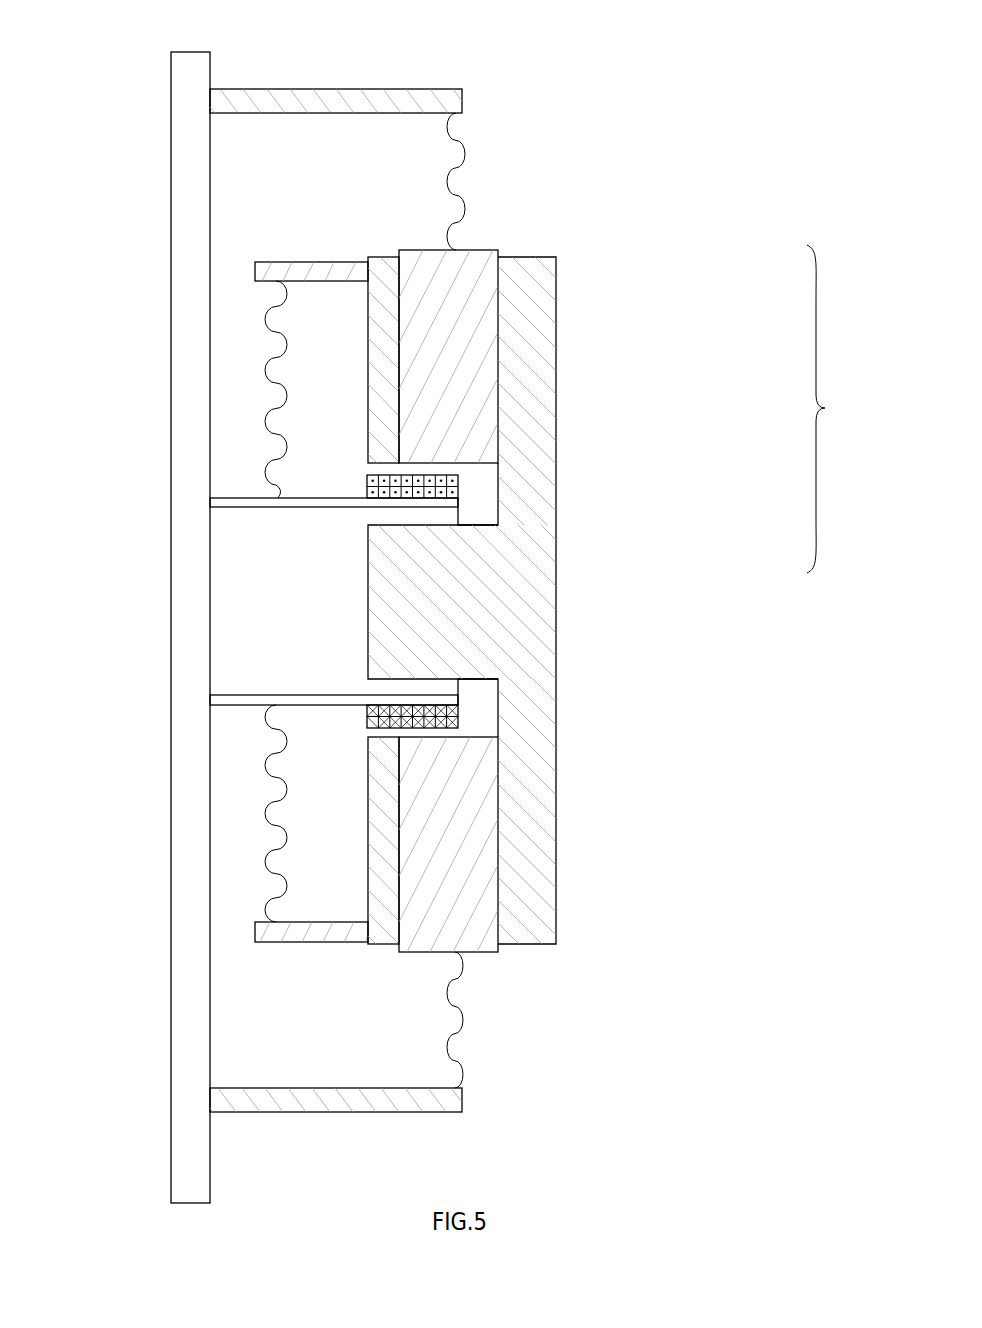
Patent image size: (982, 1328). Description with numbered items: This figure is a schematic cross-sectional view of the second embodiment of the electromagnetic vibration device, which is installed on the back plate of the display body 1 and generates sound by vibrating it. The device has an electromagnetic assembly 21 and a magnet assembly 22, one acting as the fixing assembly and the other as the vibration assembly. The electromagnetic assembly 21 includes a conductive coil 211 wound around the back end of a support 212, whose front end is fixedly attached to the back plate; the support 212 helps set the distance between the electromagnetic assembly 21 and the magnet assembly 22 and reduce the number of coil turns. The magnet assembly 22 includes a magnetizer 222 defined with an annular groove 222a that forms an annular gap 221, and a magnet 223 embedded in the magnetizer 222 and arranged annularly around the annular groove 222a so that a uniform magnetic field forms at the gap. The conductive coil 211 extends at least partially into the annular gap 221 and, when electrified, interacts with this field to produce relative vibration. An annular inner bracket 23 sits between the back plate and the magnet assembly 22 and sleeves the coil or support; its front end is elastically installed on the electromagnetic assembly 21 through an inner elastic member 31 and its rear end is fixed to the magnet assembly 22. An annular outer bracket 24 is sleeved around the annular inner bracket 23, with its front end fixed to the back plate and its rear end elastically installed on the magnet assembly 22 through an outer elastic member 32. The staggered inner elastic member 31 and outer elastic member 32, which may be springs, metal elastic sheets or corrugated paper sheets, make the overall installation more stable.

The display body 1 is at (188, 188).
The electromagnetic assembly 21 is at (437, 717).
The conductive coil 211 is at (559, 696).
The support 212 is at (229, 504).
The magnet assembly 22 is at (855, 409).
The annular gap 221 is at (576, 440).
The magnetizer 222 is at (478, 645).
The annular groove 222a is at (478, 493).
The magnet 223 is at (462, 378).
The annular inner bracket 23 is at (316, 263).
The annular outer bracket 24 is at (405, 1112).
The inner elastic member 31 is at (281, 387).
The outer elastic member 32 is at (467, 1040).